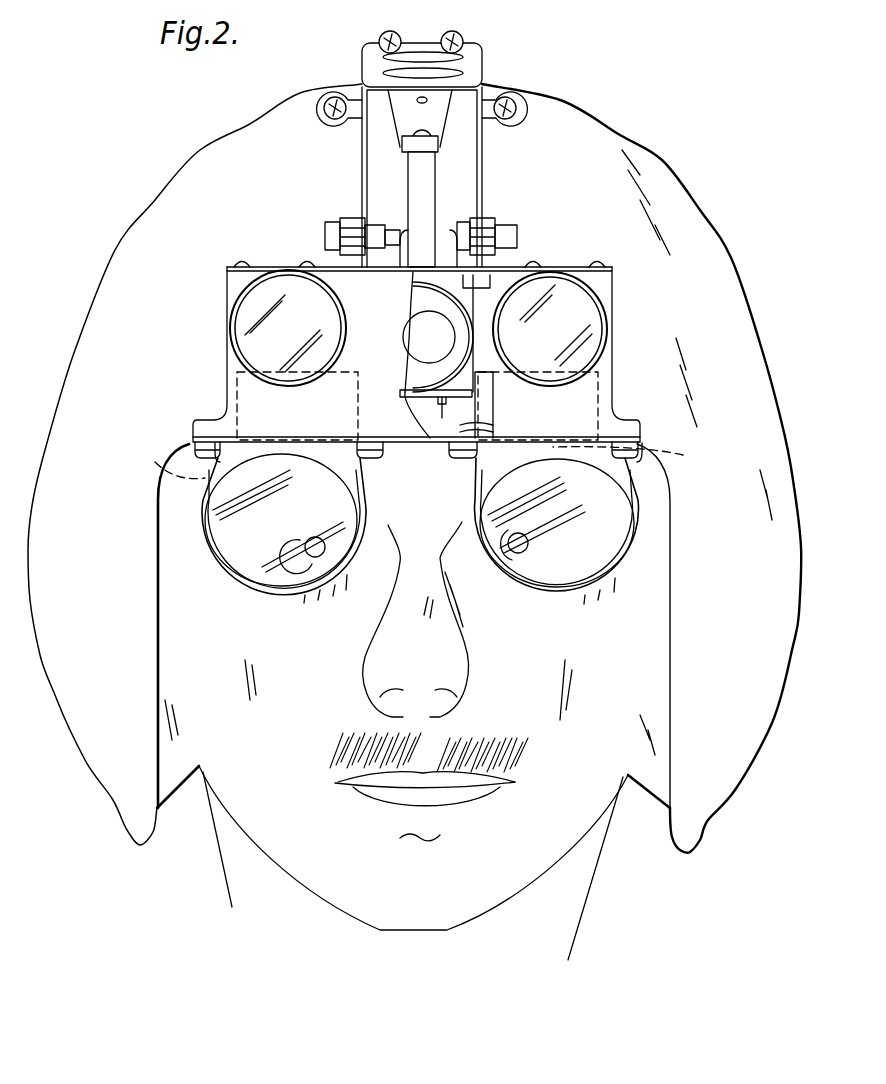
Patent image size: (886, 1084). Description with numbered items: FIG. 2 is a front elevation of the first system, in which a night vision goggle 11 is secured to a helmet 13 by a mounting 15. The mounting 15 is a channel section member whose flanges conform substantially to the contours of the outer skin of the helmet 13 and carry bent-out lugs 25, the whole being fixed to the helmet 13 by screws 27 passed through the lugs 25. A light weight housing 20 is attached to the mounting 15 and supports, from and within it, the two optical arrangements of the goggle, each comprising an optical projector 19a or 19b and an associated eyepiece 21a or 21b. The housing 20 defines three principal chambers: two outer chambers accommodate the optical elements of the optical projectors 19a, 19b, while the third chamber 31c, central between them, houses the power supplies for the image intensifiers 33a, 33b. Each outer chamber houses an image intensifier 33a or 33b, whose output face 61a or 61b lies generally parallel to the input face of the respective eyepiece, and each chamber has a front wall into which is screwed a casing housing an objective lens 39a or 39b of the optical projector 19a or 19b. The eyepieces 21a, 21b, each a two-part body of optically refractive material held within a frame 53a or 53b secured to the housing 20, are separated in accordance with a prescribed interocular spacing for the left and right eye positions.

The night vision goggle 11 is at (422, 338).
The helmet 13 is at (650, 157).
The mounting 15 is at (457, 149).
The optical projector 19a is at (592, 292).
The optical projector 19b is at (245, 294).
The housing 20 is at (613, 347).
The eyepiece 21a is at (598, 519).
The eyepiece 21b is at (222, 517).
The bent-out lugs 25 is at (533, 128).
The screws 27 is at (509, 99).
The third chamber 31c is at (483, 250).
The image intensifier 33a is at (577, 400).
The image intensifier 33b is at (253, 387).
The objective lens 39a is at (573, 293).
The objective lens 39b is at (277, 287).
The frame 53a is at (606, 551).
The frame 53b is at (233, 549).
The output face 61a is at (641, 455).
The output face 61b is at (166, 459).